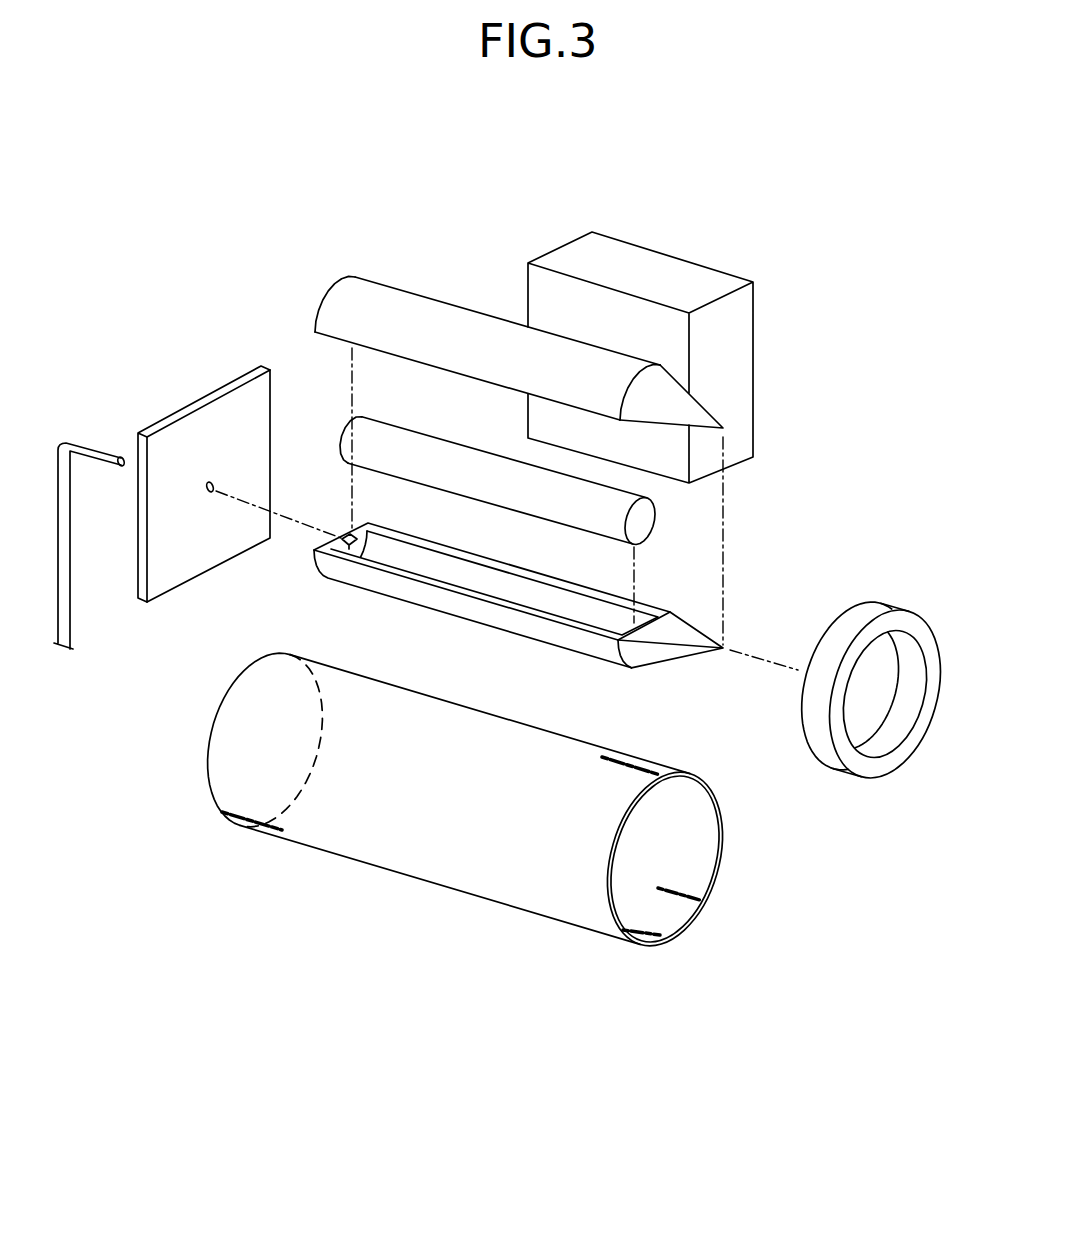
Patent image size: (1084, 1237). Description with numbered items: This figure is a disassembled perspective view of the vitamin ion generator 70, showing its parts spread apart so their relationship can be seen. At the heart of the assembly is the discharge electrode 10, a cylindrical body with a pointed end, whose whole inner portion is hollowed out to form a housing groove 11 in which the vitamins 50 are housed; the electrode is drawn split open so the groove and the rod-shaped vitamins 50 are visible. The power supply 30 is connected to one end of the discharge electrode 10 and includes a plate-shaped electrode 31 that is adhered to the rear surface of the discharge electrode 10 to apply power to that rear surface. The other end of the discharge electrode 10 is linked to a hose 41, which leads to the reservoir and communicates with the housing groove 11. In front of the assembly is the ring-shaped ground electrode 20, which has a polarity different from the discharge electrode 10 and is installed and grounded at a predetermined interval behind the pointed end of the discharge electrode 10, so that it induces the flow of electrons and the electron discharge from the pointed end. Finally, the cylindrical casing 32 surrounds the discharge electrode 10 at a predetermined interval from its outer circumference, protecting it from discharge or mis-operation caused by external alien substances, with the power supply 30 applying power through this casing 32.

The discharge electrode 10 is at (660, 428).
The housing groove 11 is at (637, 630).
The ground electrode 20 is at (868, 753).
The power supply 30 is at (710, 277).
The plate-shaped electrode 31 is at (177, 408).
The casing 32 is at (680, 933).
The hose 41 is at (63, 617).
The vitamins 50 is at (655, 532).
The vitamin ion generator 70 is at (543, 962).